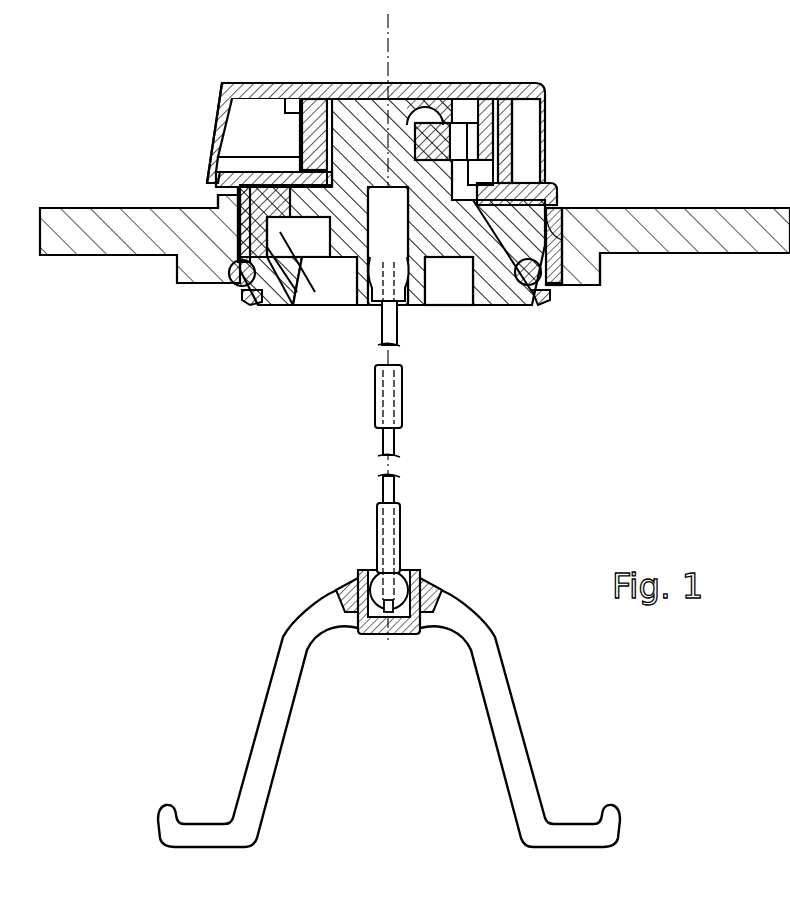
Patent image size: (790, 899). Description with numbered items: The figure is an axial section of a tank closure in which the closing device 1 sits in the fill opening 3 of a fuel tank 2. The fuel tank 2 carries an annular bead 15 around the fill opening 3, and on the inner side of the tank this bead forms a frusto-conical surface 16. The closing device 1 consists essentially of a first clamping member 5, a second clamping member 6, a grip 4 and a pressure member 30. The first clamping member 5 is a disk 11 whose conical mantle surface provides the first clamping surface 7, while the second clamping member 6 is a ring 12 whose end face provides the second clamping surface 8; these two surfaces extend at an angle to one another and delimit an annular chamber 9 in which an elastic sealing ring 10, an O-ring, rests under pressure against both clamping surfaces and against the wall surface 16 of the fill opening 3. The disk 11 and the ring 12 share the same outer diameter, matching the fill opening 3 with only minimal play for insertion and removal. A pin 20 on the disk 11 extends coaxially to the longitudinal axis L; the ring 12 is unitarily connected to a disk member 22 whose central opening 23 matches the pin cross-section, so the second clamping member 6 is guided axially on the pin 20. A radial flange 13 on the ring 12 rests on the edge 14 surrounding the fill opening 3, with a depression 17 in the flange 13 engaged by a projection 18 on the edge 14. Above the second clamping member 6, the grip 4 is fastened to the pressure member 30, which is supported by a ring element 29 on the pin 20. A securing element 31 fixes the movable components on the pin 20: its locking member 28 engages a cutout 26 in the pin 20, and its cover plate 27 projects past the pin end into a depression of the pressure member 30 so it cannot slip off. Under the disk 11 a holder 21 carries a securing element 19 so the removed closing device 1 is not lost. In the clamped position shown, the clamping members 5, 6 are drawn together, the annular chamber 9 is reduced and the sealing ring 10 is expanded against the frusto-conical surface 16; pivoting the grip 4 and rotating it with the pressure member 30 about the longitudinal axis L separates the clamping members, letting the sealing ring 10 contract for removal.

The closing device 1 is at (552, 100).
The fuel tank 2 is at (693, 232).
The fill opening 3 is at (580, 286).
The grip 4 is at (505, 83).
The first clamping member 5 is at (296, 292).
The second clamping member 6 is at (330, 255).
The first clamping surface 7 is at (238, 292).
The second clamping surface 8 is at (515, 288).
The annular chamber 9 is at (550, 292).
The elastic sealing ring 10 is at (232, 282).
The disk 11 is at (262, 296).
The ring 12 is at (500, 255).
The radial flange 13 is at (555, 195).
The edge 14 is at (560, 222).
The annular bead 15 is at (602, 262).
The frusto-conical surface 16 is at (552, 285).
The depression 17 is at (216, 192).
The projection 18 is at (216, 204).
The securing element 19 is at (362, 560).
The pin 20 is at (430, 205).
The holder 21 is at (416, 300).
The disk member 22 is at (282, 190).
The central opening 23 is at (312, 136).
The cutout 26 is at (420, 100).
The cover plate 27 is at (345, 90).
The locking member 28 is at (450, 100).
The ring element 29 is at (468, 140).
The pressure member 30 is at (253, 84).
The securing element 31 is at (402, 80).
The longitudinal axis L is at (384, 40).